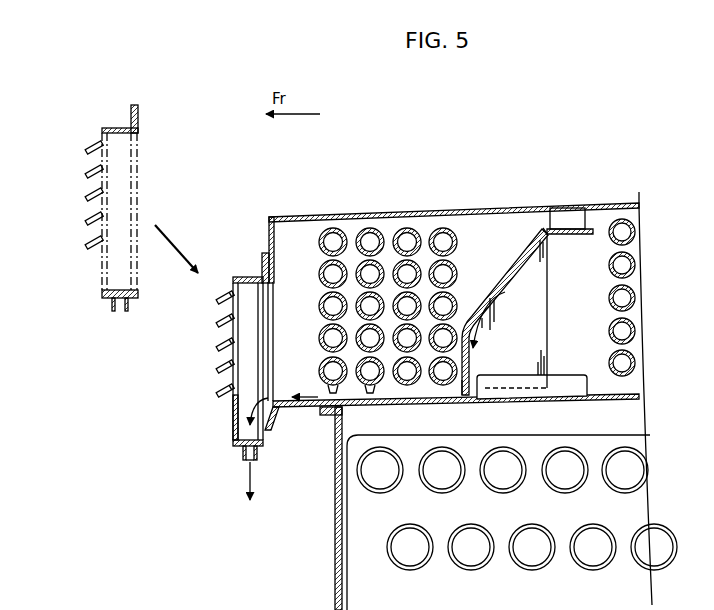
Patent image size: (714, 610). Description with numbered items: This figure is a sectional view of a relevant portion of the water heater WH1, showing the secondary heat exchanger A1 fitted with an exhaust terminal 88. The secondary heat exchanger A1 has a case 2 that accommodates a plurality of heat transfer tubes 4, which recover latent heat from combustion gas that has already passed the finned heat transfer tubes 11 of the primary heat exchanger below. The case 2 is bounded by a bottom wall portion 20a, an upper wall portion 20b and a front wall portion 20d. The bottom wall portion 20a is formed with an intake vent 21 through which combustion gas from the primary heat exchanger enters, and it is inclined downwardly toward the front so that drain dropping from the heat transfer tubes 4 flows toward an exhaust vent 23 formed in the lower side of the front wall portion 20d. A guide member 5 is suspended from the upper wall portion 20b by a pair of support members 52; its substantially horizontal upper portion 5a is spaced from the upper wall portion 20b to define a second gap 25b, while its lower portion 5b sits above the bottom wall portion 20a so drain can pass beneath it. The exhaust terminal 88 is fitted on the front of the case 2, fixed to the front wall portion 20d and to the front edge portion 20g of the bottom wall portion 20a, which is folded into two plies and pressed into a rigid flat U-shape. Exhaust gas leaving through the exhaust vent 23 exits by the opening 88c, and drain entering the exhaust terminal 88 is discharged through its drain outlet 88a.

The case 2 is at (301, 216).
The heat transfer tubes 4 is at (333, 228).
The secondary heat exchanger A1 is at (365, 214).
The upper wall portion 20b is at (492, 210).
The front wall portion 20d is at (268, 240).
The bottom wall portion 20a is at (298, 407).
The front edge portion 20g is at (275, 425).
The exhaust vent 23 is at (274, 336).
The intake vent 21 is at (520, 397).
The second gap 25b is at (547, 228).
The support members 52 is at (566, 220).
The guide member 5 is at (520, 265).
The upper portion 5a is at (573, 234).
The lower portion 5b is at (470, 395).
The heat transfer tubes 11 is at (420, 491).
The exhaust terminal 88 is at (238, 276).
The opening 88c is at (218, 312).
The drain outlet 88a is at (245, 462).
The water heater WH1 is at (418, 150).